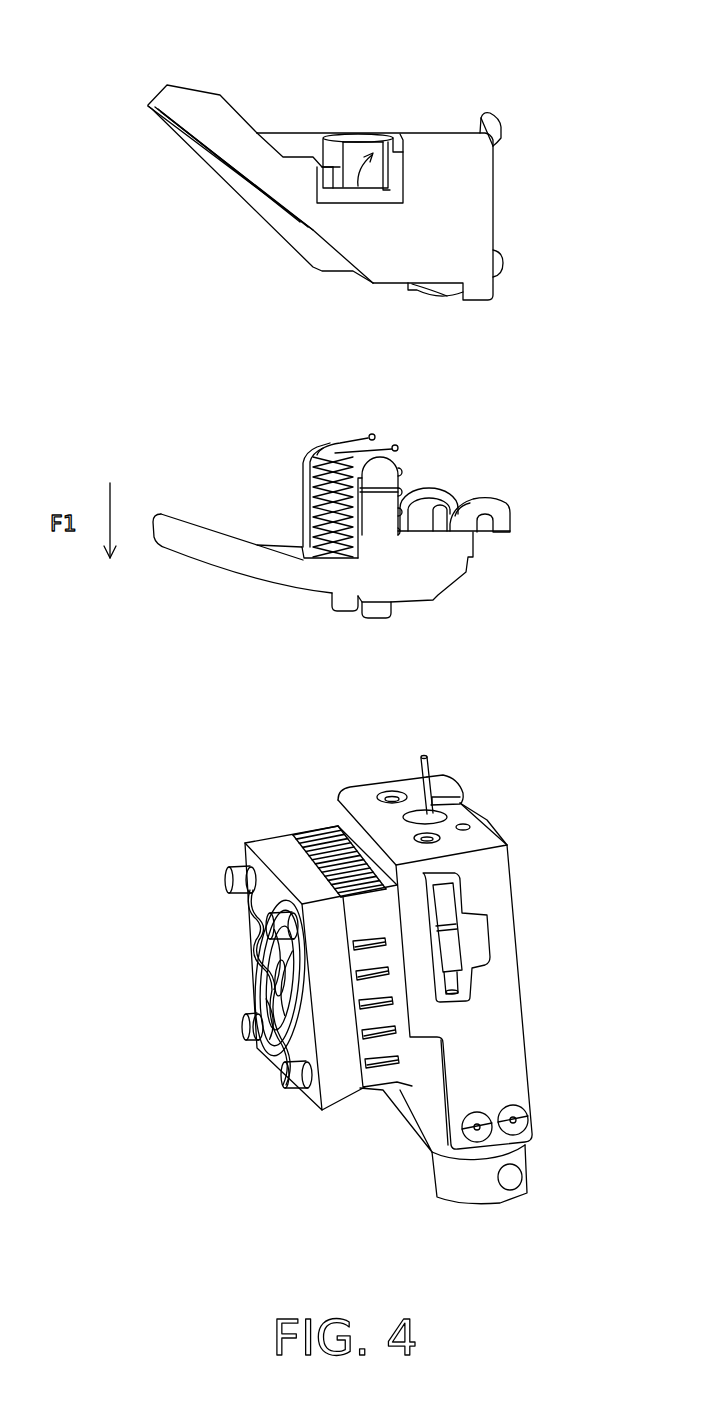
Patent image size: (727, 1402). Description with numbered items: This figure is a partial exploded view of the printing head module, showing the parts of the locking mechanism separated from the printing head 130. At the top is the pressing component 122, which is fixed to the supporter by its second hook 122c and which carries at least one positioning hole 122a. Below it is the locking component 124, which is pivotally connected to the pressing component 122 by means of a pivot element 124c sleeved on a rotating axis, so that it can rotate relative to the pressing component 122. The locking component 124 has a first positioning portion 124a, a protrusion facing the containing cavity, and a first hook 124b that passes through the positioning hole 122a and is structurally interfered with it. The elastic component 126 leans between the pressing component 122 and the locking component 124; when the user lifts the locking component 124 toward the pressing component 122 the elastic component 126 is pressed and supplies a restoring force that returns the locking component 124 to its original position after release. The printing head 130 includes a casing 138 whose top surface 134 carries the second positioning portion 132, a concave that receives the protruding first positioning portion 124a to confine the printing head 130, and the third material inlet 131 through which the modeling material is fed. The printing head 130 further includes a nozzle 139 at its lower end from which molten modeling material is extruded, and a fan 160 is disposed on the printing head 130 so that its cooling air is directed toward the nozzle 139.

The pressing component 122 is at (495, 165).
The positioning hole 122a is at (410, 227).
The second hook 122c is at (495, 125).
The locking component 124 is at (440, 578).
The first positioning portion 124a is at (383, 603).
The first hook 124b is at (387, 480).
The pivot element 124c is at (500, 525).
The elastic component 126 is at (395, 446).
The printing head 130 is at (527, 1038).
The third material inlet 131 is at (460, 818).
The second positioning portion 132 is at (392, 797).
The top surface 134 is at (485, 838).
The casing 138 is at (438, 783).
The nozzle 139 is at (518, 1157).
The fan 160 is at (267, 843).